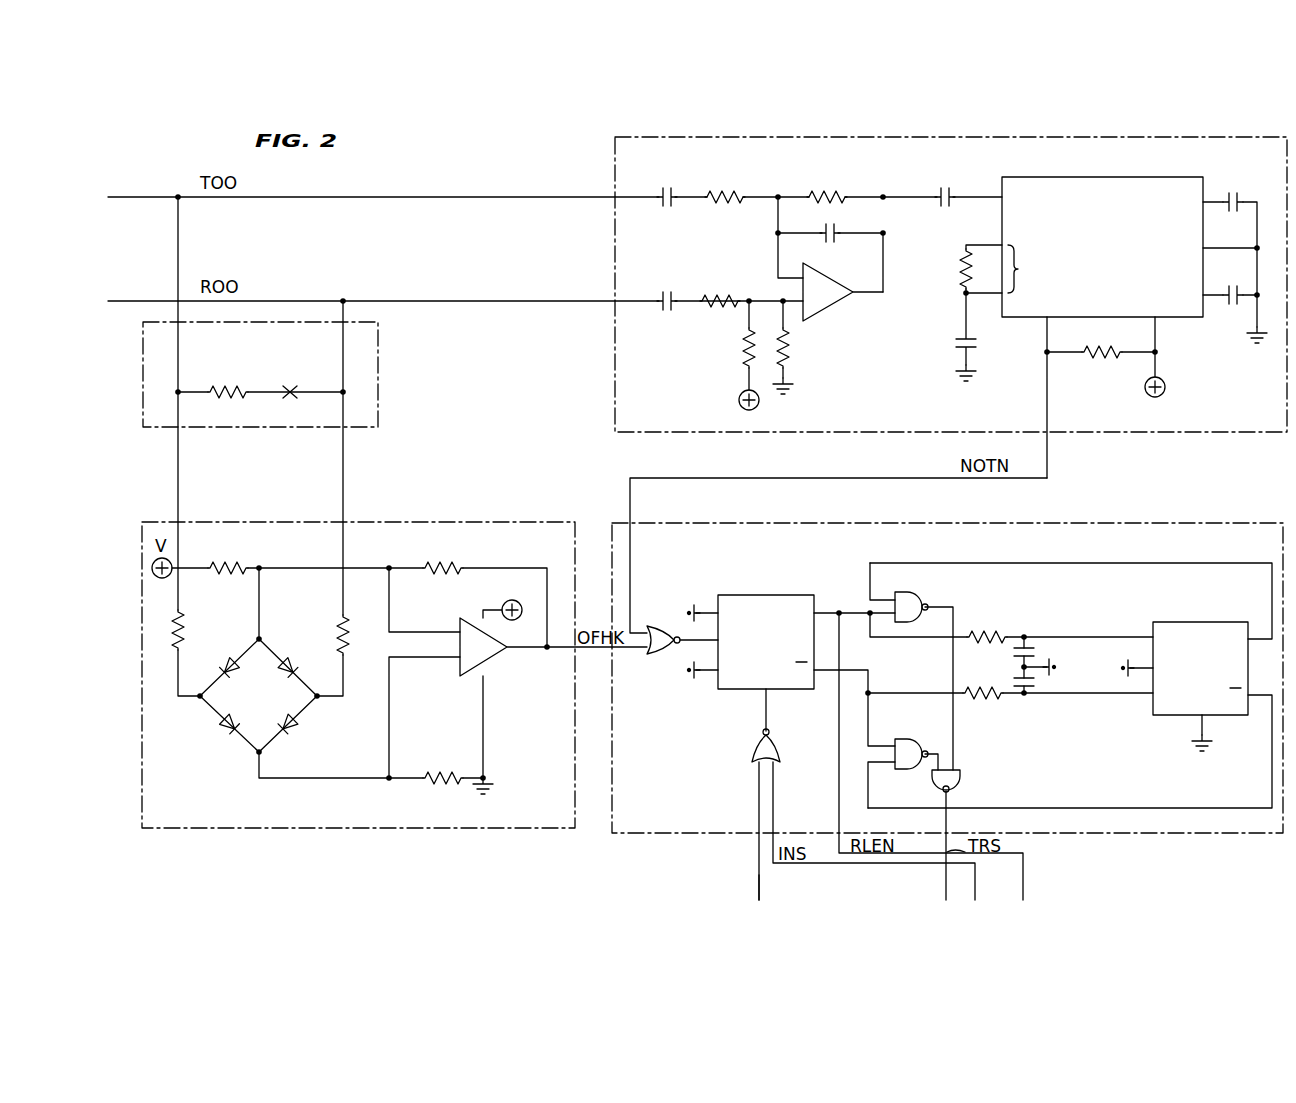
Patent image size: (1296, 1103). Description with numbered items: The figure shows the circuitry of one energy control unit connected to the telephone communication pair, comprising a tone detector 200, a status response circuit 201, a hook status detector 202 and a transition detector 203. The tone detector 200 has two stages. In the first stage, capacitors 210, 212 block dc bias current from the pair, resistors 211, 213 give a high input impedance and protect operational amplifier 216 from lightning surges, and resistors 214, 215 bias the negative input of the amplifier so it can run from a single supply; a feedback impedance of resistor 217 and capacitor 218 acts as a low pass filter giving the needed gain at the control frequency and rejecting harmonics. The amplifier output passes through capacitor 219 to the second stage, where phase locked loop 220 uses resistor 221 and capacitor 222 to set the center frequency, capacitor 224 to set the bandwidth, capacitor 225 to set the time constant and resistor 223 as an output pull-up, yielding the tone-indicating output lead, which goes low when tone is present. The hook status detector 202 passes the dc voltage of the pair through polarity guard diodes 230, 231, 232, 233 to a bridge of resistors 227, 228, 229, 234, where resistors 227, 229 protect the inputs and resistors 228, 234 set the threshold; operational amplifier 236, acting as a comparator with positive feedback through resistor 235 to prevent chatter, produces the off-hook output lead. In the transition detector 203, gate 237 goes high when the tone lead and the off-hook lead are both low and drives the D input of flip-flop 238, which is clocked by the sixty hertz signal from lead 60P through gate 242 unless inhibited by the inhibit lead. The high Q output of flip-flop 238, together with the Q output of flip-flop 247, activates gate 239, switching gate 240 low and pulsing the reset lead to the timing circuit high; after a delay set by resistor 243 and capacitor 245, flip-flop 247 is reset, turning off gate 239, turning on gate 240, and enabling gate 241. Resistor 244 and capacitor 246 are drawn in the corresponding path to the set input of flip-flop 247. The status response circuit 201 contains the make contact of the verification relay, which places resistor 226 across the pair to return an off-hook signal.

The tone detector 200 is at (1022, 163).
The status response circuit 201 is at (325, 364).
The hook status detector 202 is at (365, 825).
The transition detector 203 is at (1084, 548).
The capacitor 210 is at (666, 189).
The resistor 211 is at (726, 189).
The capacitor 212 is at (665, 291).
The resistor 213 is at (722, 291).
The resistor 214 is at (740, 348).
The resistor 215 is at (793, 348).
The operational amplifier 216 is at (826, 310).
The resistor 217 is at (823, 189).
The capacitor 218 is at (826, 222).
The capacitor 219 is at (944, 207).
The phase locked loop 220 is at (1084, 177).
The resistor 221 is at (956, 267).
The capacitor 222 is at (956, 343).
The resistor 223 is at (1102, 359).
The capacitor 224 is at (1234, 190).
The capacitor 225 is at (1234, 308).
The resistor 226 is at (230, 398).
The resistor 227 is at (183, 626).
The resistor 228 is at (231, 561).
The resistor 229 is at (332, 629).
The polarity guard diode 230 is at (226, 660).
The polarity guard diode 231 is at (294, 654).
The polarity guard diode 232 is at (292, 729).
The polarity guard diode 233 is at (221, 729).
The resistor 234 is at (443, 768).
The resistor 235 is at (442, 560).
The operational amplifier 236 is at (462, 623).
The gate 237 is at (658, 656).
The flip-flop 238 is at (762, 594).
The gate 239 is at (904, 594).
The gate 240 is at (960, 775).
The gate 241 is at (904, 738).
The gate 242 is at (750, 748).
The resistor 243 is at (987, 631).
The resistor 244 is at (983, 702).
The capacitor 245 is at (1040, 652).
The capacitor 246 is at (1040, 682).
The flip-flop 247 is at (1190, 622).
The lead 60P is at (757, 884).